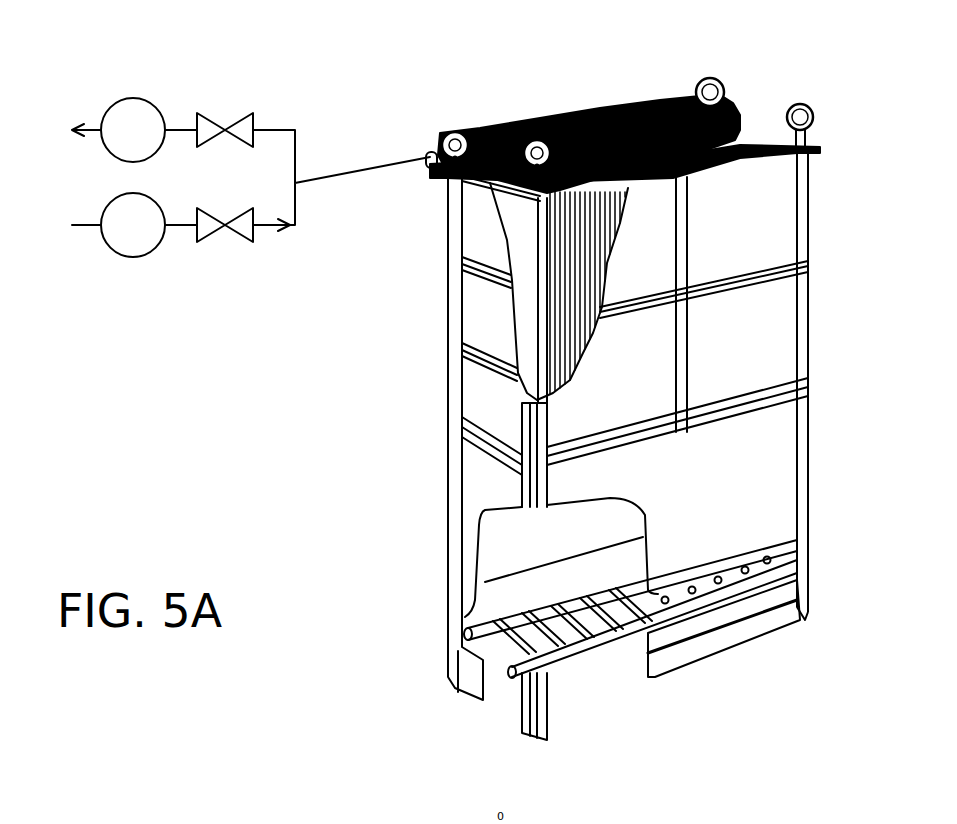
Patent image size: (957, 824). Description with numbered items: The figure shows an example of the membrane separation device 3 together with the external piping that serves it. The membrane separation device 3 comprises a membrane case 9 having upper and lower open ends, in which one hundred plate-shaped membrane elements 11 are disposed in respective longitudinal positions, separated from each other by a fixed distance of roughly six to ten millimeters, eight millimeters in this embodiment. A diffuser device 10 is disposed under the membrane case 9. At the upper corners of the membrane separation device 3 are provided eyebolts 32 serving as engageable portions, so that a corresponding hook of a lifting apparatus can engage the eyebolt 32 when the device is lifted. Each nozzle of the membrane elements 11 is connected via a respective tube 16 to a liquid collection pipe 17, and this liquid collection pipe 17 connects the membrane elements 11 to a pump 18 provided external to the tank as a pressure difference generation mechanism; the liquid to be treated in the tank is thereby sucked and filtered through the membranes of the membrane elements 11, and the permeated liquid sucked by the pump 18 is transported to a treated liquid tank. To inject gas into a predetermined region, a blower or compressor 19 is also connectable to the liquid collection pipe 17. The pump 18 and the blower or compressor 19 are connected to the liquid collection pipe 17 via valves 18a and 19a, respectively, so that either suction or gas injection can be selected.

The membrane separation device 3 is at (357, 67).
The membrane case 9 is at (447, 363).
The diffuser device 10 is at (623, 633).
The membrane element 11 is at (745, 133).
The tube 16 is at (540, 118).
The liquid collection pipe 17 is at (435, 150).
The pump 18 is at (133, 98).
The valve 18a is at (207, 118).
The blower or compressor 19 is at (133, 258).
The valve 19a is at (207, 243).
The eyebolt 32 is at (805, 104).